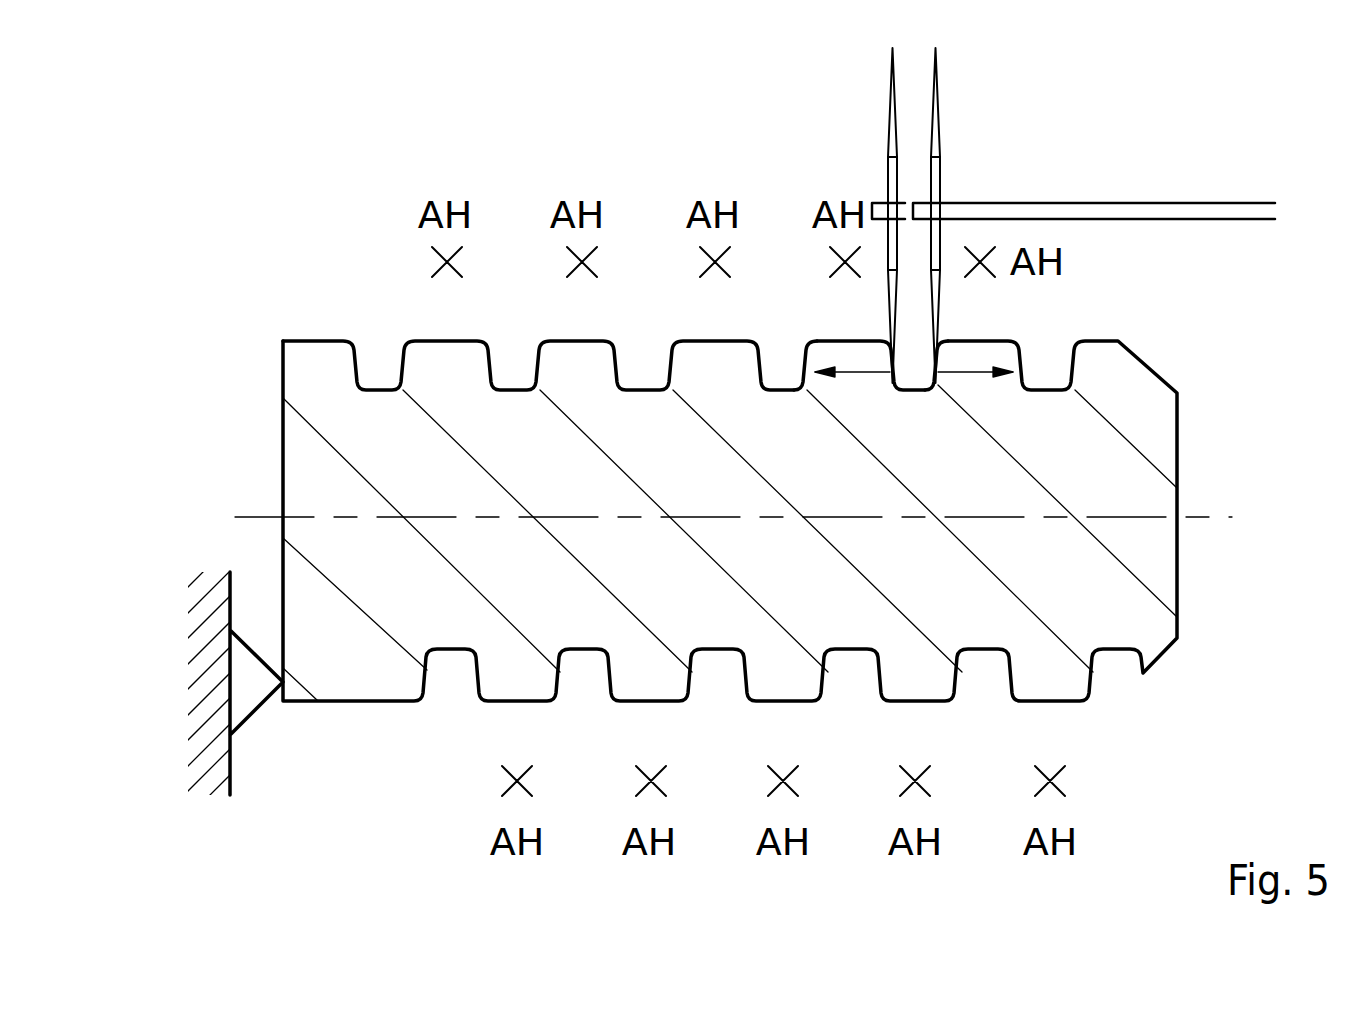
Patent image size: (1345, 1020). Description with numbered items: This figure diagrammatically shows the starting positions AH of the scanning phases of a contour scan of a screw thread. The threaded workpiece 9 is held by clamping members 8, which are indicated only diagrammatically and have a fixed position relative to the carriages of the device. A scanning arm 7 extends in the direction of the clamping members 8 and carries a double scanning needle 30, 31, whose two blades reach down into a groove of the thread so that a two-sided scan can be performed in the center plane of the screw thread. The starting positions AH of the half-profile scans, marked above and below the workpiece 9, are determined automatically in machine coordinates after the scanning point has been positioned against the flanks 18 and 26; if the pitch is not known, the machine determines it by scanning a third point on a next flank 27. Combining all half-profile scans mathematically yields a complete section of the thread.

The scanning arm 7 is at (1172, 203).
The clamping members 8 is at (212, 740).
The workpiece body 9 is at (394, 460).
The flank 18 is at (938, 378).
The flank 26 is at (892, 378).
The next flank 27 is at (805, 363).
The double scanning needle 30 is at (940, 123).
The double scanning needle 31 is at (940, 300).